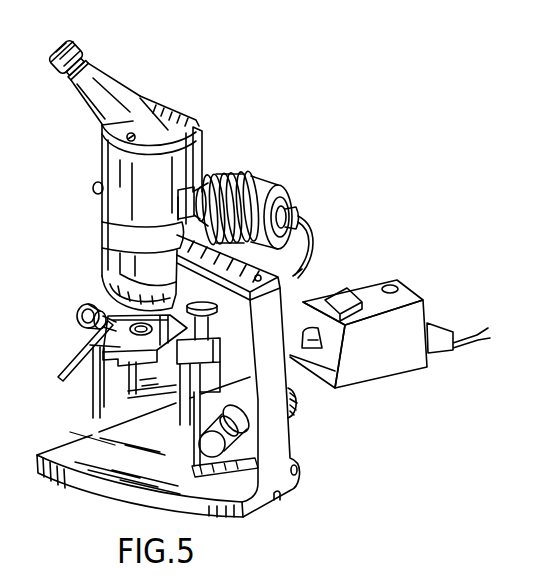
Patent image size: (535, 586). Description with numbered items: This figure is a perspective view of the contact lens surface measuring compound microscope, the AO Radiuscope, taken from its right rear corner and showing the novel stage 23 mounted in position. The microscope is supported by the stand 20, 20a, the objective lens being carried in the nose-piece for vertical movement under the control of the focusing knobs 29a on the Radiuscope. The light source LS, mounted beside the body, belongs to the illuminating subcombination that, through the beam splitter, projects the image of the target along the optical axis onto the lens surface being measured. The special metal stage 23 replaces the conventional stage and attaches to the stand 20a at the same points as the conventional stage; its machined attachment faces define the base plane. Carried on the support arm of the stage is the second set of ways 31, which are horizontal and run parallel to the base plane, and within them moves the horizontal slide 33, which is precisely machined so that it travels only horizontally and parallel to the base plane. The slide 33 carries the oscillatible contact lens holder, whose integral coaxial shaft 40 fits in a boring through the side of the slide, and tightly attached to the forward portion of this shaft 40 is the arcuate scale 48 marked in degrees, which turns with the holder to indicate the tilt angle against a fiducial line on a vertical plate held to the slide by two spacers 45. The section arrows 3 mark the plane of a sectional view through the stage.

The stand 20 is at (211, 164).
The light source LS is at (278, 184).
The stand 20a is at (285, 433).
The contact lens surface measuring microscope stage 23 is at (93, 410).
The focusing knobs 29a is at (296, 396).
The horizontal slide 33 is at (92, 336).
The shaft 40 is at (105, 312).
The spacers 45 is at (93, 334).
The arcuate scale 48 is at (64, 380).
The second set of ways 31 is at (95, 388).
The section line 3- 3 is at (33, 377).